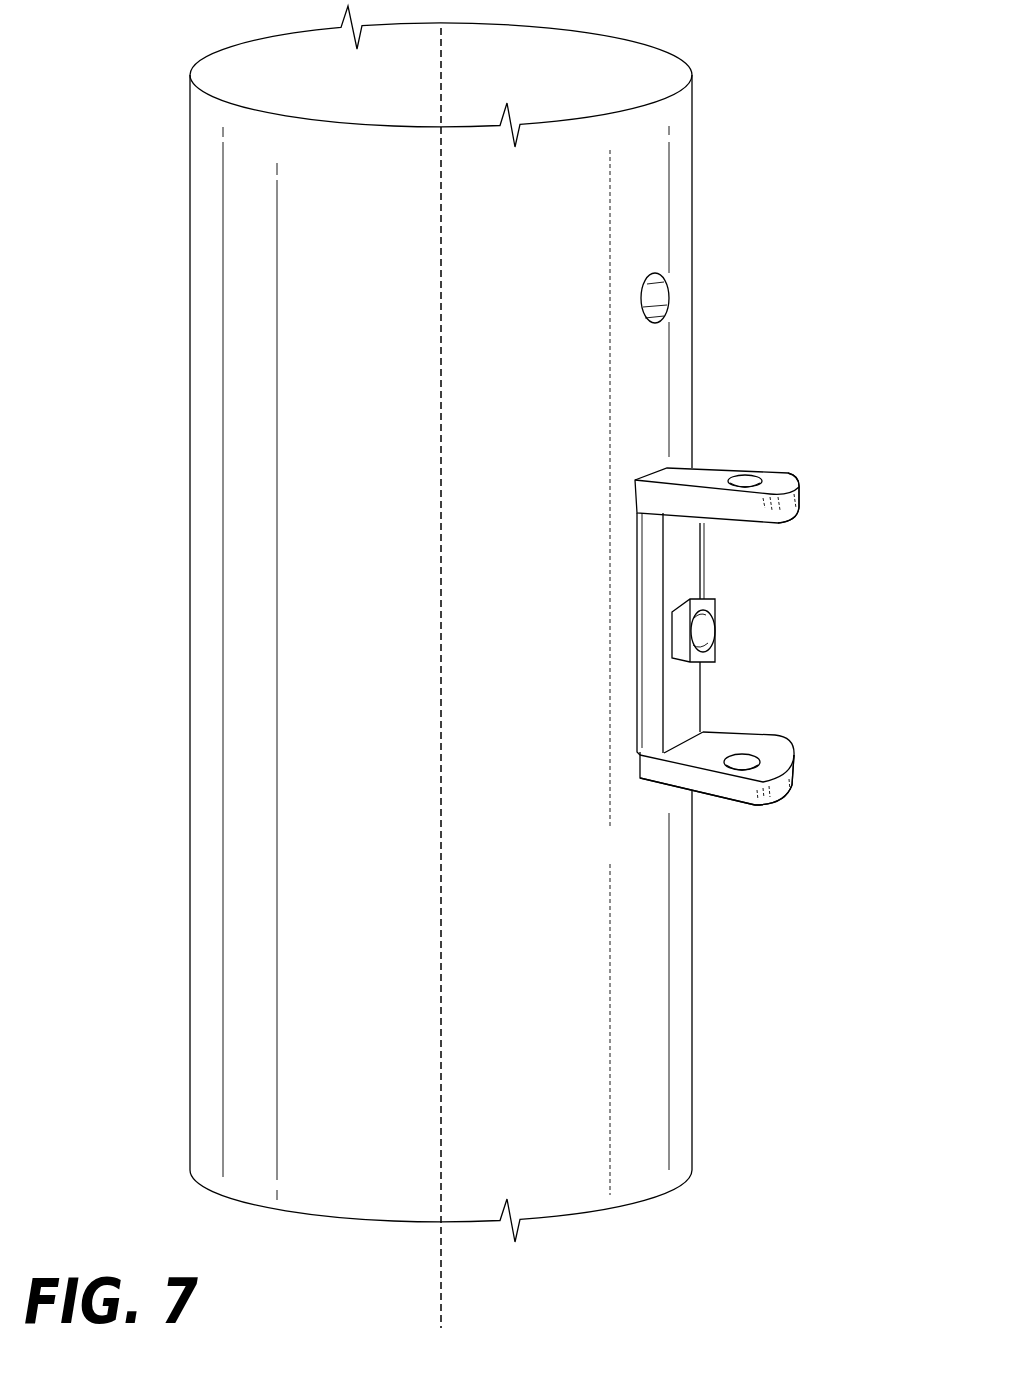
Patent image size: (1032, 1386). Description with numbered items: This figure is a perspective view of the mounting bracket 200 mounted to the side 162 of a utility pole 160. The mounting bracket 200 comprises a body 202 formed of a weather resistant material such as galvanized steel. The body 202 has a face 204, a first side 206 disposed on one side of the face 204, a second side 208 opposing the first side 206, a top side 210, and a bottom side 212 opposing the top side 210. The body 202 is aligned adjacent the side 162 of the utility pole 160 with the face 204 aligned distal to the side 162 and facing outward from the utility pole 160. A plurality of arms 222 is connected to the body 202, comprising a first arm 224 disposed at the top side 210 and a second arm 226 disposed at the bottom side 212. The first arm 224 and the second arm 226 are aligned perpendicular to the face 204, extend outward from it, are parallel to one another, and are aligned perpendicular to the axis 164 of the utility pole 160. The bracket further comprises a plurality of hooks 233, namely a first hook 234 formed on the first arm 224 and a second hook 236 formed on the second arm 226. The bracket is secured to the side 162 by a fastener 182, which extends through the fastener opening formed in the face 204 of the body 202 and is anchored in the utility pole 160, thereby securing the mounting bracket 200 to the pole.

The utility pole 160 is at (678, 185).
The side 162 is at (691, 373).
The axis 164 is at (441, 77).
The fastener 182 is at (714, 632).
The mounting bracket 200 is at (720, 654).
The body 202 is at (707, 654).
The face 204 is at (685, 721).
The first side 206 is at (652, 713).
The second side 208 is at (665, 634).
The top side 210 is at (760, 461).
The bottom side 212 is at (748, 803).
The plurality of arms 222 is at (710, 812).
The first arm 224 is at (713, 480).
The second arm 226 is at (715, 750).
The plurality of hooks 233 is at (795, 800).
The first hook 234 is at (757, 477).
The second hook 236 is at (790, 776).